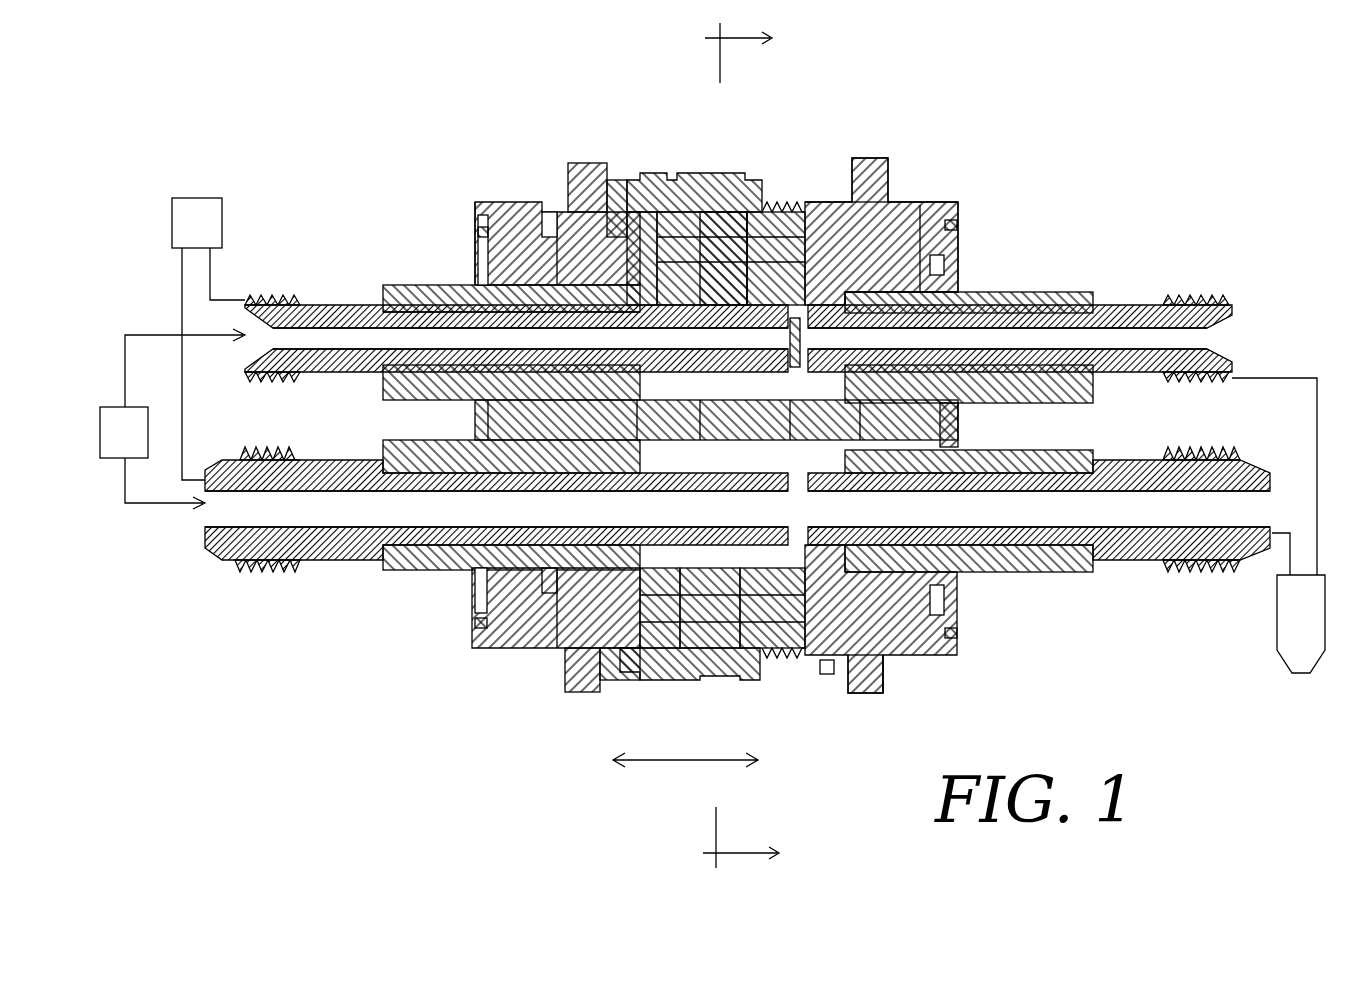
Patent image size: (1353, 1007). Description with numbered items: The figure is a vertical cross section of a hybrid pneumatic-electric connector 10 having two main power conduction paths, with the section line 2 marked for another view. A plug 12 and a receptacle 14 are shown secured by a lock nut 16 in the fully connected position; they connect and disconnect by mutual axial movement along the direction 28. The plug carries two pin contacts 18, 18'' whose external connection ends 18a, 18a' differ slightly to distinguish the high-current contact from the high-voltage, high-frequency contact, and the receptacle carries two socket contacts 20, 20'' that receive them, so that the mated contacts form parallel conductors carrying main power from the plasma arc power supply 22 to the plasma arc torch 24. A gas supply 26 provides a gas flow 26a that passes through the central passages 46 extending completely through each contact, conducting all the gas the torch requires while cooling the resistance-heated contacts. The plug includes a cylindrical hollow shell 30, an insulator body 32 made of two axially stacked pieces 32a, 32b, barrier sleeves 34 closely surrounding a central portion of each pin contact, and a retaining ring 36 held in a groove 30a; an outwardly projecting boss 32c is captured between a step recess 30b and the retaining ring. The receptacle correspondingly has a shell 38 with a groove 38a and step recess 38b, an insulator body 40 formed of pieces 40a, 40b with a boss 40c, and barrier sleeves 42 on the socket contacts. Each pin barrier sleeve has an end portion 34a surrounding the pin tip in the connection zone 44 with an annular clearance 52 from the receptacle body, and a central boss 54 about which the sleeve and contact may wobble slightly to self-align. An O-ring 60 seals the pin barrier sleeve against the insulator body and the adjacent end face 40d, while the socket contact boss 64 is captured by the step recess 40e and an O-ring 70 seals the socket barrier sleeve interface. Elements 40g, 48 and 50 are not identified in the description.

The section line 2- 2 is at (749, 445).
The hybrid pneumatic-electric connector 10 is at (734, 117).
The plug 12 is at (526, 138).
The receptacle 14 is at (930, 137).
The lock nut 16 is at (582, 163).
The pin contact 18 is at (522, 324).
The external connection end 18a is at (261, 318).
The pin contact 18'' is at (496, 534).
The external connection end 18a' is at (224, 515).
The socket contact 20 is at (1020, 316).
The socket contact 20'' is at (1039, 492).
The plasma arc power supply 22 is at (197, 223).
The plasma arc torch 24 is at (1301, 624).
The gas supply 26 is at (124, 432).
The gas flow 26a is at (215, 337).
The direction of axial movement 28 is at (672, 762).
The plug shell 30 is at (478, 204).
The groove 30a is at (478, 225).
The step recess 30b is at (597, 200).
The insulator body 32 is at (480, 648).
The insulator body piece 32a is at (480, 580).
The insulator body piece 32b is at (560, 648).
The boss 32c is at (557, 212).
The barrier sleeve 34 is at (400, 287).
The end portion 34a is at (720, 180).
The retaining ring 36 is at (487, 238).
The receptacle shell 38 is at (760, 660).
The groove 38a is at (935, 205).
The step recess 38b is at (800, 202).
The insulator body 40 is at (870, 693).
The insulator body piece 40a is at (910, 202).
The insulator body piece 40b is at (860, 160).
The boss 40c is at (840, 202).
The end face 40d is at (638, 200).
The step recess 40e is at (942, 265).
The housing passage 40g is at (950, 292).
The barrier sleeve 42 is at (1040, 292).
The connection zone 44 is at (665, 200).
The central passage 46 is at (315, 325).
The collar 48 is at (470, 290).
The collar interface 50 is at (395, 285).
The annular clearance 52 is at (700, 200).
The boss 54 is at (525, 200).
The O-ring 60 is at (637, 680).
The boss 64 is at (945, 600).
The O-ring 70 is at (885, 660).